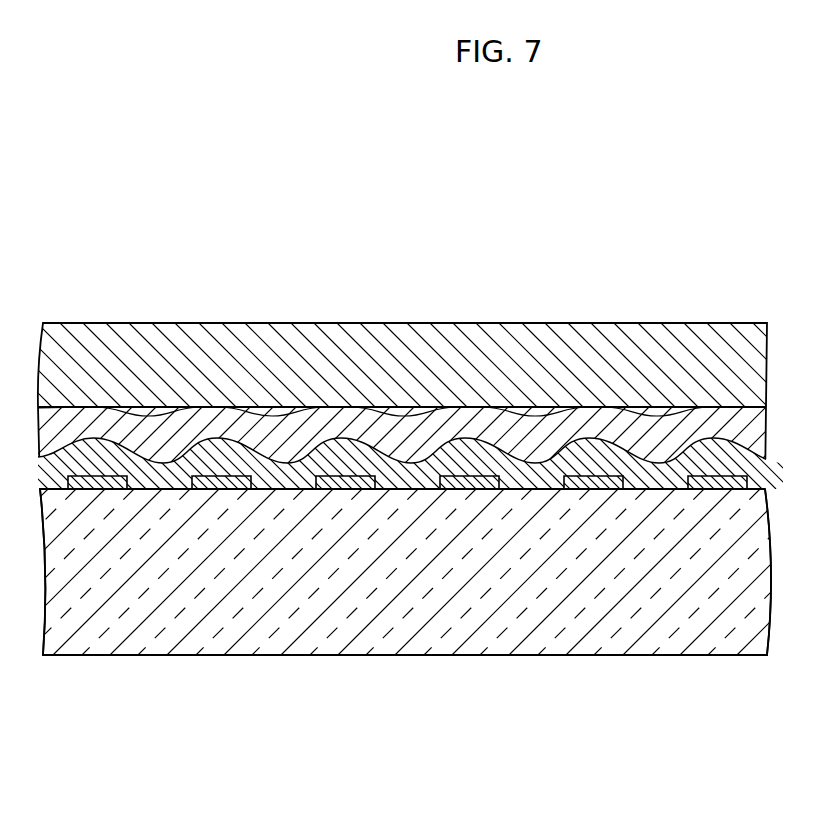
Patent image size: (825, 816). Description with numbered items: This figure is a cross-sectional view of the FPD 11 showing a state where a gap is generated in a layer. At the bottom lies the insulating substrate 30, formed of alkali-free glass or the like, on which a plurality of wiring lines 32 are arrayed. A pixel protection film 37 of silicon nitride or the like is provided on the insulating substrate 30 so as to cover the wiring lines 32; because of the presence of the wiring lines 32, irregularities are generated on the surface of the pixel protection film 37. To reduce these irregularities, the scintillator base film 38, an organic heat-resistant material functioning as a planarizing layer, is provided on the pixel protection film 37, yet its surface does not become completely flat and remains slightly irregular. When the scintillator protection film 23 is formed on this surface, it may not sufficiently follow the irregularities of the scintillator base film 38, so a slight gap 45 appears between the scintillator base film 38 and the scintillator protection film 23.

The FPD 11 is at (724, 248).
The scintillator protection film 23 is at (316, 332).
The insulating substrate 30 is at (762, 578).
The wiring lines 32 is at (705, 690).
The pixel protection film 37 is at (757, 470).
The scintillator base film 38 is at (762, 430).
The gap 45 is at (655, 413).